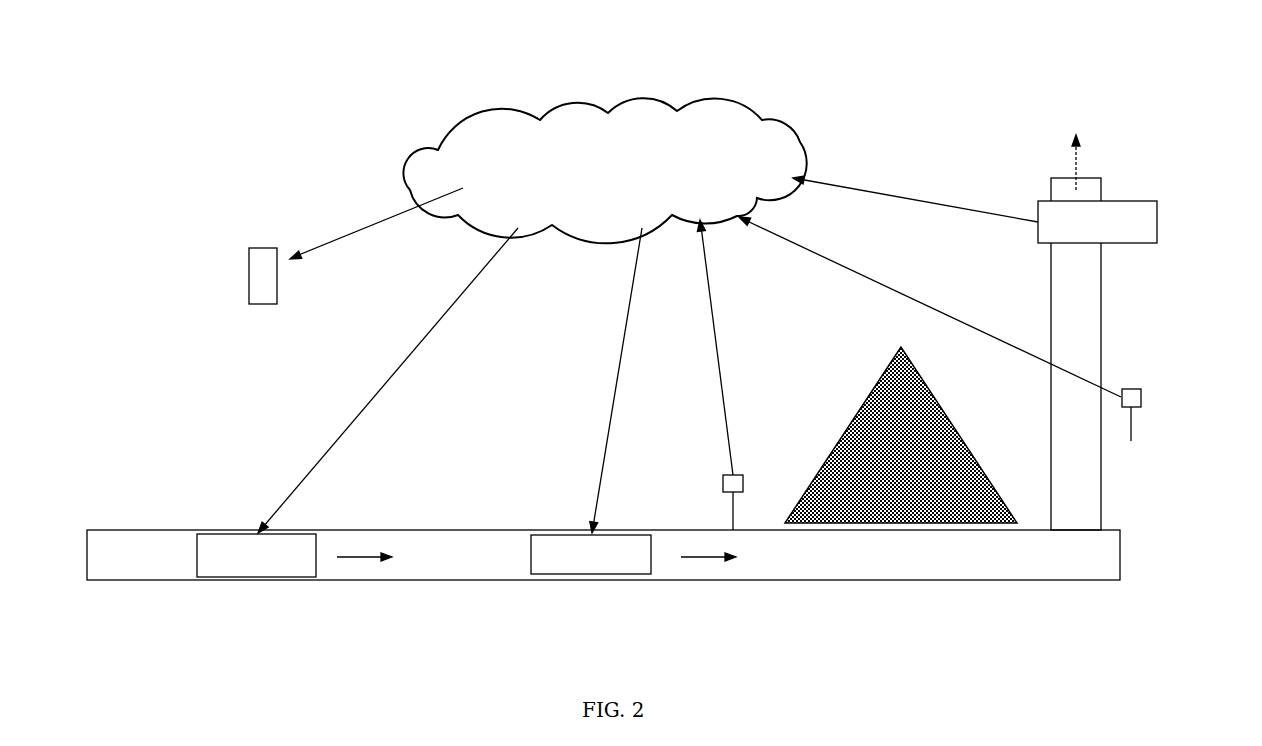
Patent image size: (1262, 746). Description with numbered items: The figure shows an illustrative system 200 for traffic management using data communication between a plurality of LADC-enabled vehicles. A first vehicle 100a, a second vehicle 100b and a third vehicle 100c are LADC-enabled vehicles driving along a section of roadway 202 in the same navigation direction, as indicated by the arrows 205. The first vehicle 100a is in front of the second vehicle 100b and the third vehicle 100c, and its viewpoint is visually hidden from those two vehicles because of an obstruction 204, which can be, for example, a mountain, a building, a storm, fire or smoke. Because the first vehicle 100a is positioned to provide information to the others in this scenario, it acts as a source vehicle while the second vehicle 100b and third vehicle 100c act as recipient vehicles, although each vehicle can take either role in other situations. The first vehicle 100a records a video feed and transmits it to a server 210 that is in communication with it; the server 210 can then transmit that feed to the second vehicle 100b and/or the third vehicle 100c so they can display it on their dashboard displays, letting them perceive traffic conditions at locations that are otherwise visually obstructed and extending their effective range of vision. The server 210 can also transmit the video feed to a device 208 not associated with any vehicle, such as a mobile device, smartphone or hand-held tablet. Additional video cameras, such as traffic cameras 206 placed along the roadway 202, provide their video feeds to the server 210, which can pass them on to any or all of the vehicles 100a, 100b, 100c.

The system 200 is at (262, 93).
The server 210 is at (633, 112).
The device 208 is at (264, 246).
The roadway 202 is at (1038, 568).
The obstruction 204 is at (875, 408).
The arrows 205 is at (360, 560).
The traffic cameras 206 is at (746, 473).
The first vehicle 100a is at (1158, 222).
The second vehicle 100b is at (641, 534).
The third vehicle 100c is at (304, 538).